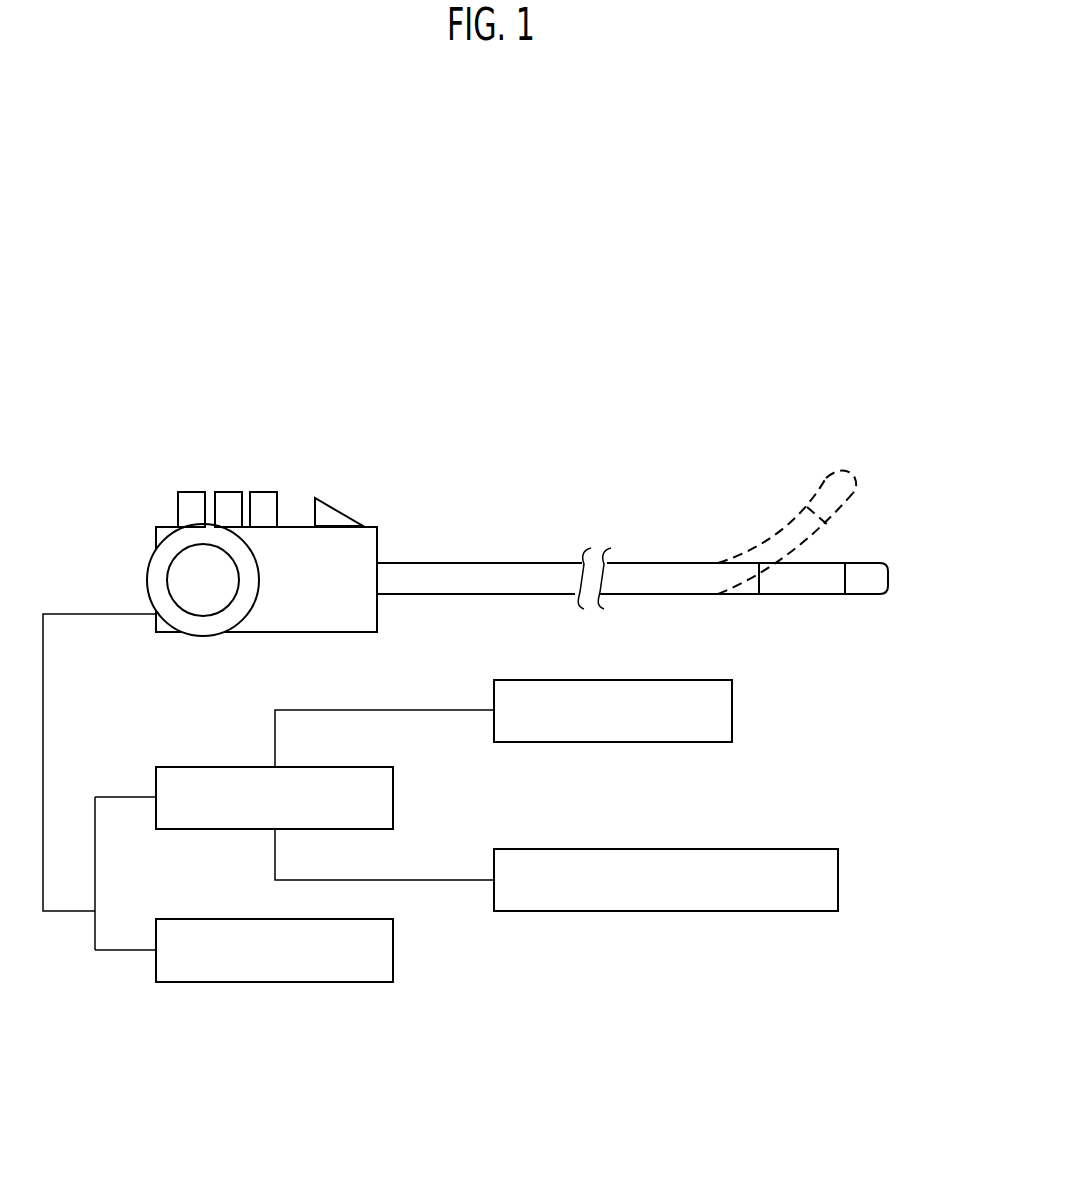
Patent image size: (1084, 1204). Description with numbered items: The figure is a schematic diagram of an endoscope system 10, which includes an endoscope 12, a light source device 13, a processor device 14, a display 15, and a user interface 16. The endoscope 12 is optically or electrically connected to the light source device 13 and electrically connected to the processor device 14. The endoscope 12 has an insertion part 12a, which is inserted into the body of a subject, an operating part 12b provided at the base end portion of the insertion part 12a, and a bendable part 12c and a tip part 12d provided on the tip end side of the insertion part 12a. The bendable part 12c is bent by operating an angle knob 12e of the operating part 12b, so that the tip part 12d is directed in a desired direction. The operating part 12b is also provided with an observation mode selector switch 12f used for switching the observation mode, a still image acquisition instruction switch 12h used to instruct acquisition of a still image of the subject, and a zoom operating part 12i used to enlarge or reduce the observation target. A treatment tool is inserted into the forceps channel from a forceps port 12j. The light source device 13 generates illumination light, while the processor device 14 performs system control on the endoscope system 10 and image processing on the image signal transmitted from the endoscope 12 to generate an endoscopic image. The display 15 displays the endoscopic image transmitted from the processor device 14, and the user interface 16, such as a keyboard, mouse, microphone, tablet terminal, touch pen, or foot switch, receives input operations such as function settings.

The endoscope system 10 is at (837, 1005).
The endoscope 12 is at (467, 478).
The insertion part 12a is at (542, 558).
The operating part 12b is at (214, 511).
The bendable part 12c is at (802, 596).
The tip part 12d is at (865, 596).
The angle knob 12e is at (147, 580).
The observation mode selector switch 12f is at (191, 491).
The still image acquisition instruction switch 12h is at (230, 491).
The zoom operating part 12i is at (265, 491).
The forceps port 12j is at (315, 513).
The light source device 13 is at (393, 951).
The processor device 14 is at (393, 798).
The display 15 is at (732, 710).
The user interface 16 is at (838, 880).